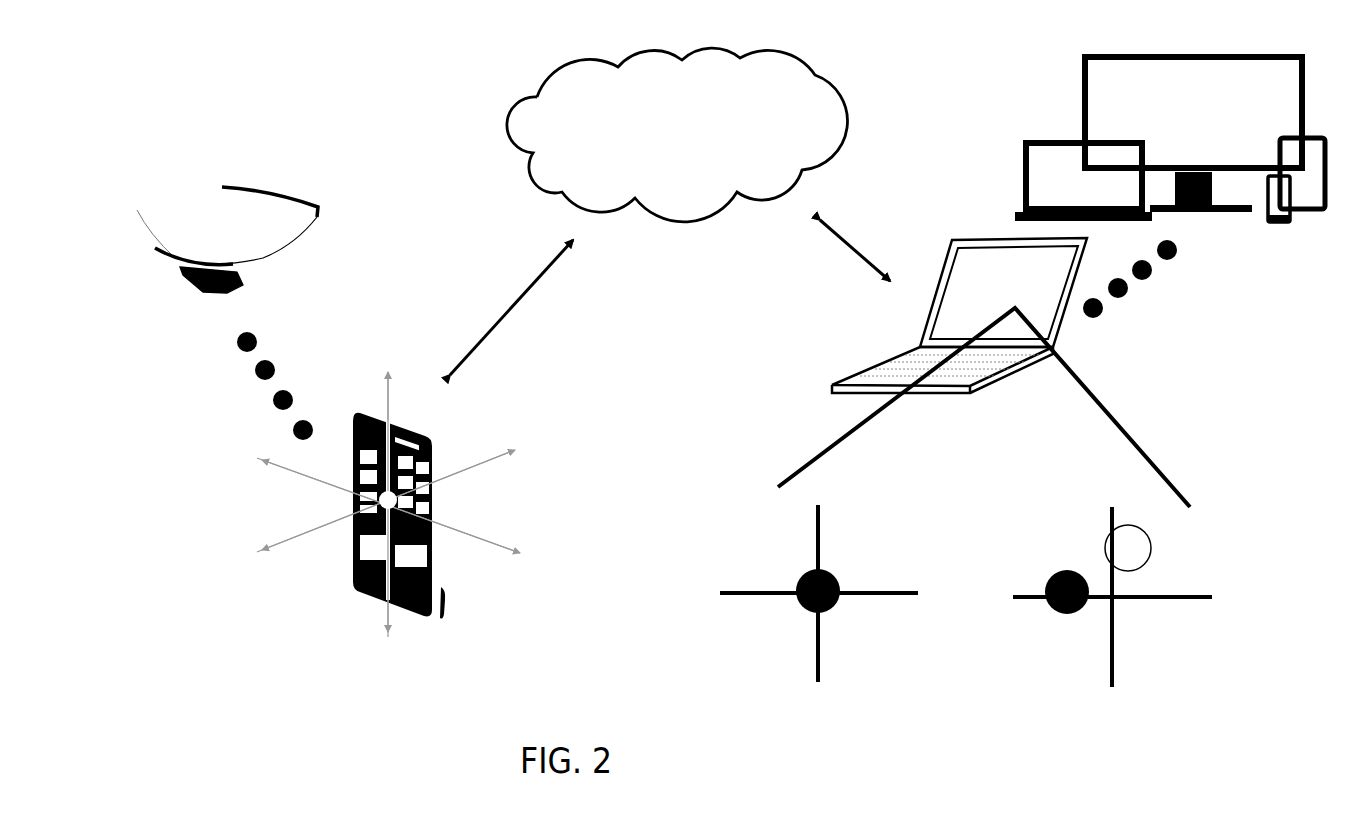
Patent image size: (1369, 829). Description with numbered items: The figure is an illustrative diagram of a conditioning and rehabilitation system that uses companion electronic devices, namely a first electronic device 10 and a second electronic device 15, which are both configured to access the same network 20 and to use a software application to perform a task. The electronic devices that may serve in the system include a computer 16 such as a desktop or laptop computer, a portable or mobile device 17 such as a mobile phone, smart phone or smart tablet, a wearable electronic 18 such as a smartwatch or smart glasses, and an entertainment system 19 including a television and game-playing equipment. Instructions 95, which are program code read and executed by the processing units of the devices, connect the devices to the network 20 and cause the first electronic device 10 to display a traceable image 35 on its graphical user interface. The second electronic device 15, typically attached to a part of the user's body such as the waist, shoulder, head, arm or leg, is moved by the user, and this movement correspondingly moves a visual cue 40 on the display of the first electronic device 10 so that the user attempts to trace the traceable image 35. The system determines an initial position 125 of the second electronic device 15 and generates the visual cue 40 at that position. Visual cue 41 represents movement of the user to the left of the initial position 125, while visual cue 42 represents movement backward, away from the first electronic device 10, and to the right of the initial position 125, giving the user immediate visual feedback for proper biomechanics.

The first electronic device 10 is at (1037, 300).
The second electronic device 15 is at (465, 592).
The computer 16 is at (1083, 182).
The portable or mobile device 17 is at (1315, 200).
The wearable electronic 18 is at (302, 252).
The entertainment system 19 is at (1193, 134).
The network 20 is at (677, 135).
The traceable image 35 is at (1022, 563).
The visual cue 40 is at (827, 615).
The visual cue 41 is at (1057, 612).
The visual cue 42 is at (1137, 555).
The instructions 95 is at (670, 297).
The initial position 125 is at (790, 620).